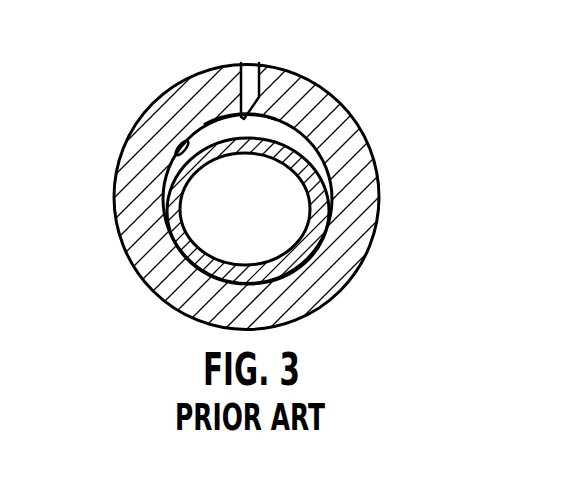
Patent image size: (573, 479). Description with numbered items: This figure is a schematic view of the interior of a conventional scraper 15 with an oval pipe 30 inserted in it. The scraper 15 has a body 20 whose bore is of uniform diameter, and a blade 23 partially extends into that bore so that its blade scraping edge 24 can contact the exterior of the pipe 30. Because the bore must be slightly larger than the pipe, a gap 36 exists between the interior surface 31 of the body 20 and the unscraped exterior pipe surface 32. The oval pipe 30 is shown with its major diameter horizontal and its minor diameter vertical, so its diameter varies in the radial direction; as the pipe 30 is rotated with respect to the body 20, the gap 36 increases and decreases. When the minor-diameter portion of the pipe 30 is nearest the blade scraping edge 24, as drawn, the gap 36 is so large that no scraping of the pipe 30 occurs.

The scraper 15 is at (404, 68).
The body 20 is at (379, 171).
The blade 23 is at (250, 62).
The blade scraping edge 24 is at (238, 118).
The pipe 30 is at (182, 210).
The interior surface 31 is at (175, 152).
The unscraped exterior pipe surface 32 is at (293, 140).
The gap 36 is at (266, 128).